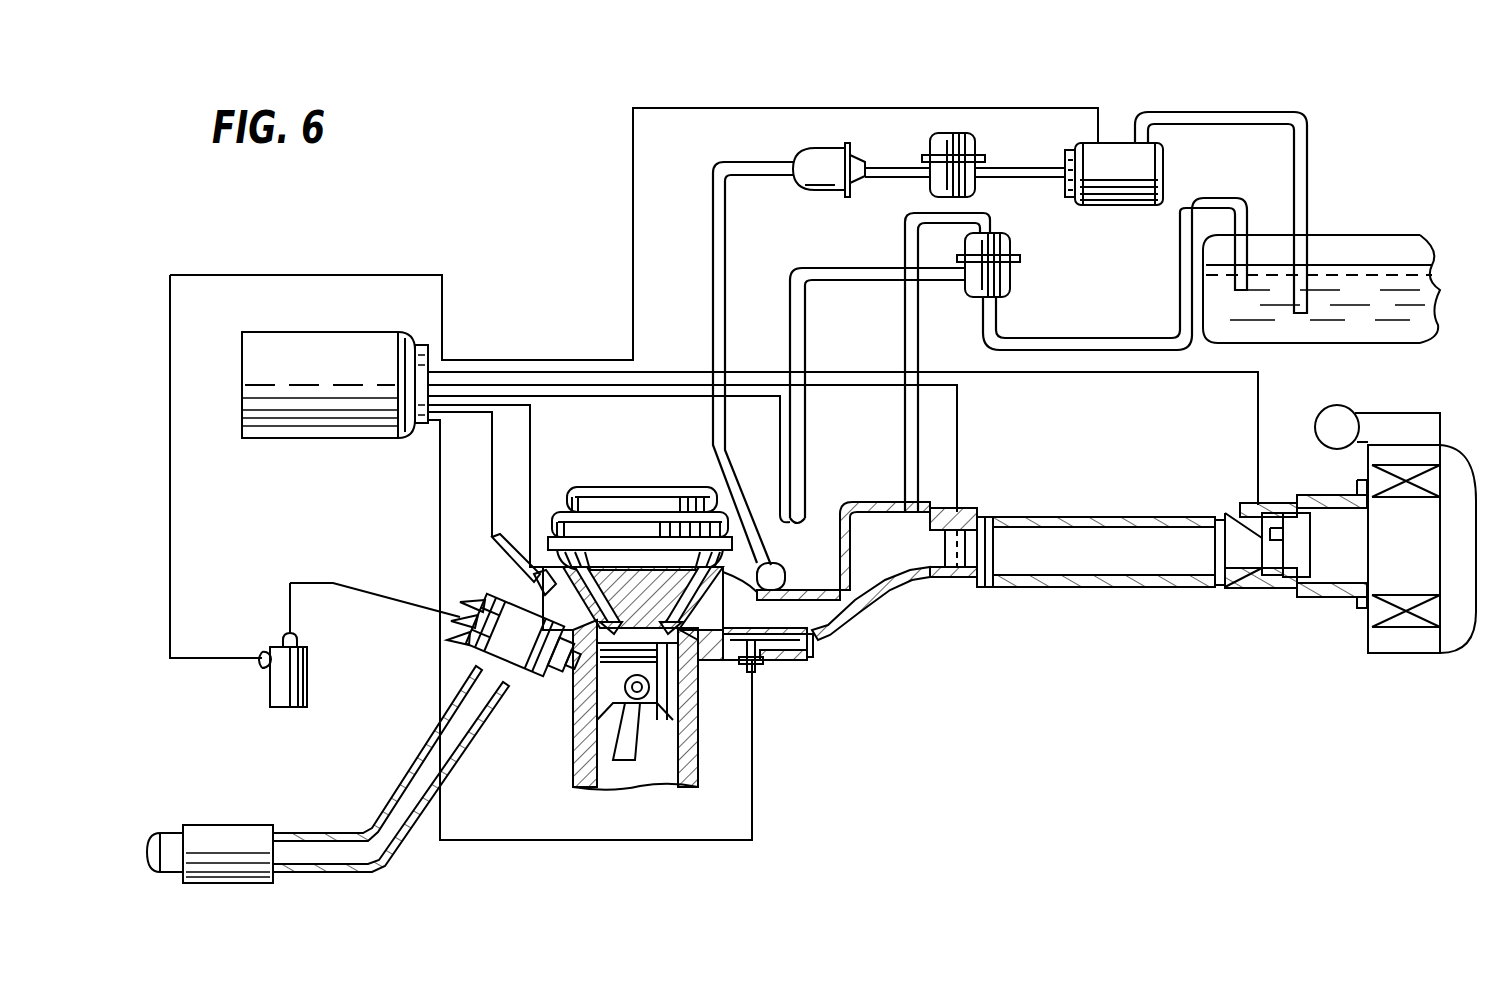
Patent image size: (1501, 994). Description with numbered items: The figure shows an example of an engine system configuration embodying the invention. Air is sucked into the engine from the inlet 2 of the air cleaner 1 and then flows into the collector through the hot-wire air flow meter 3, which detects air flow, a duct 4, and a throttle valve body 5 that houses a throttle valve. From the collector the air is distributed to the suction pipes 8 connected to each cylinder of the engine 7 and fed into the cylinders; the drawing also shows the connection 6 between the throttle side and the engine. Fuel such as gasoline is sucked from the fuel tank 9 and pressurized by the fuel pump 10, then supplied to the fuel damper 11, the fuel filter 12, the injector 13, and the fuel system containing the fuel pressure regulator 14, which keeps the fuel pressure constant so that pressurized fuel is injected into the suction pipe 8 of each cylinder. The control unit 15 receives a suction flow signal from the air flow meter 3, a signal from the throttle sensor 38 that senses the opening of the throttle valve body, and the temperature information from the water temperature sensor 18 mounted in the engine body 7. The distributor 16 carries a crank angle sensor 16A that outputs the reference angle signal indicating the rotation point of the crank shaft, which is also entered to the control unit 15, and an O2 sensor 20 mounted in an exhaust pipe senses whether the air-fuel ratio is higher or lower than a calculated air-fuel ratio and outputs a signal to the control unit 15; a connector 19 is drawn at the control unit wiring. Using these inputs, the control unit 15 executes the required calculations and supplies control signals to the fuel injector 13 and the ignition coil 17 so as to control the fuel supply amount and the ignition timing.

The air cleaner 1 is at (1400, 655).
The inlet 2 is at (1343, 407).
The hot-wire air flow meter 3 is at (1243, 592).
The duct 4 is at (1113, 588).
The throttle valve body 5 is at (958, 578).
The intake manifold 6 is at (877, 578).
The engine 7 is at (615, 487).
The suction pipes 8 is at (808, 656).
The fuel tank 9 is at (1363, 235).
The fuel pump 10 is at (1120, 143).
The fuel damper 11 is at (975, 135).
The fuel filter 12 is at (821, 148).
The injector 13 is at (782, 560).
The fuel pressure regulator 14 is at (1010, 238).
The control unit 15 is at (330, 332).
The distributor 16 is at (455, 642).
The crank angle sensor 16A is at (540, 625).
The ignition coil 17 is at (303, 647).
The water temperature sensor 18 is at (754, 672).
The connector 19 is at (260, 670).
The O2 sensor 20 is at (493, 540).
The throttle sensor 38 is at (970, 505).